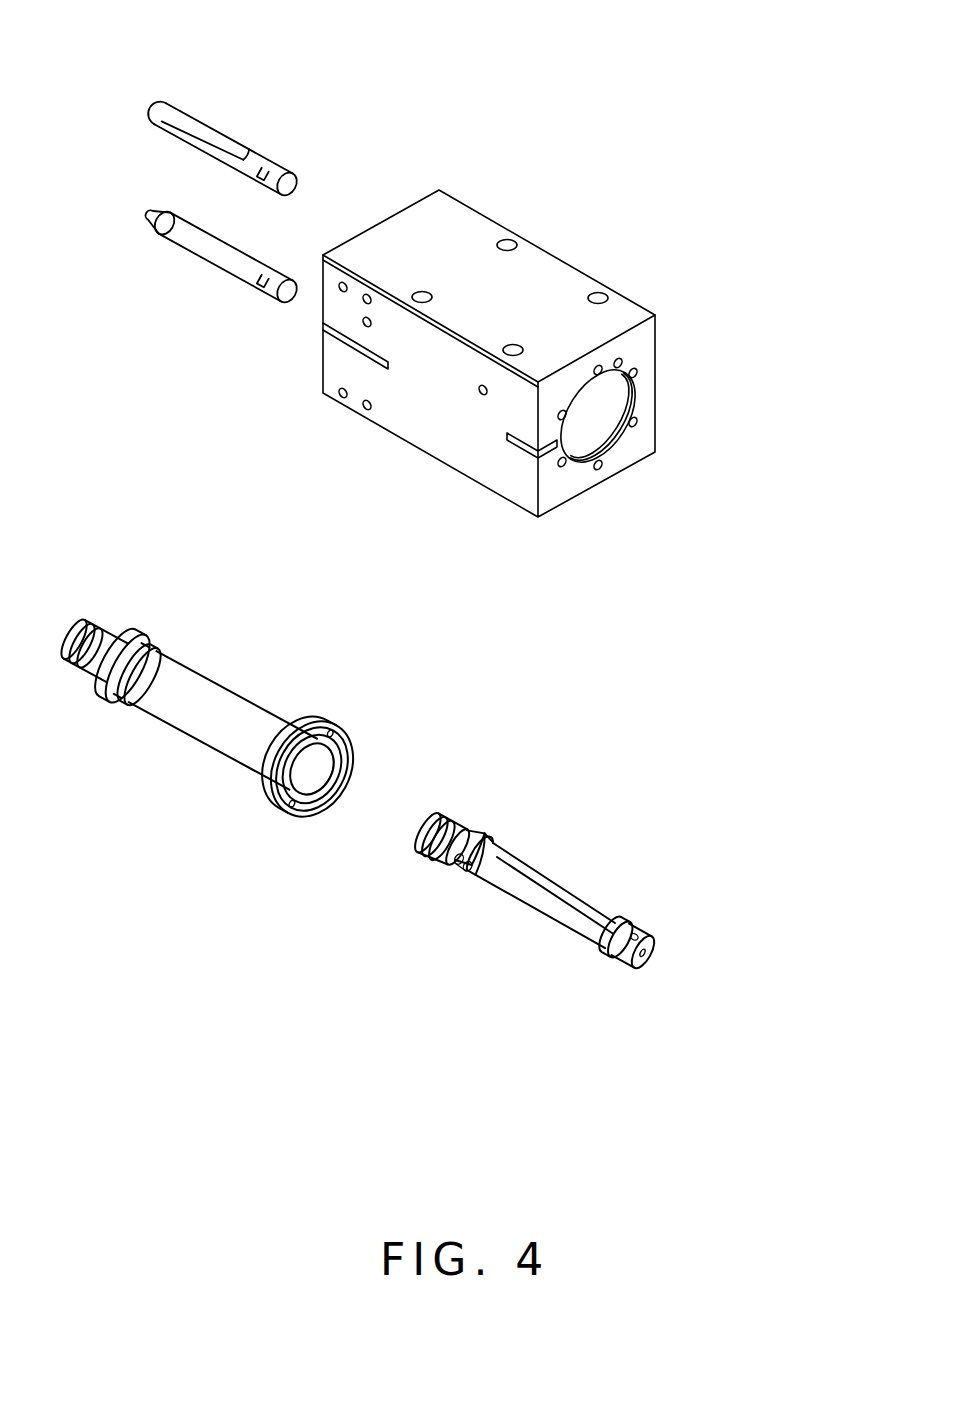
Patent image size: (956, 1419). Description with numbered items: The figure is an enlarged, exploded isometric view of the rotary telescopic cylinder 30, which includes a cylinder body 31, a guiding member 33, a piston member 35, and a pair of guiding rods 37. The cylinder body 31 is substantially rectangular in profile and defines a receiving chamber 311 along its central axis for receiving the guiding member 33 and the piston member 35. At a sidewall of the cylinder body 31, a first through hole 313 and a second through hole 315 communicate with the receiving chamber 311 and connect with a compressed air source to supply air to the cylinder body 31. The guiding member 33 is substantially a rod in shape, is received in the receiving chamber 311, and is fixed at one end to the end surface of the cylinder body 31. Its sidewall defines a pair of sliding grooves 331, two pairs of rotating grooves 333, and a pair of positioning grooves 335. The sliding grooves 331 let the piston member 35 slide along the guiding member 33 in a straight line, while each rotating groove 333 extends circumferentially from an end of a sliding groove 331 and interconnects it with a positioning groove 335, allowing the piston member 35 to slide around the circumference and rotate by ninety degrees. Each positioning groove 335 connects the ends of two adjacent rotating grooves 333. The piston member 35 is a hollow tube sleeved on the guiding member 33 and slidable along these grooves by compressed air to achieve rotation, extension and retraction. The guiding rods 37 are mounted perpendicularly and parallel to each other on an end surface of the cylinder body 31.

The rotary telescopic cylinder 30 is at (544, 77).
The cylinder body 31 is at (548, 273).
The receiving chamber 311 is at (583, 425).
The first through hole 313 is at (511, 352).
The second through hole 315 is at (412, 303).
The guiding member 33 is at (547, 908).
The sliding groove 331 is at (528, 878).
The rotating groove 333 is at (488, 843).
The positioning groove 335 is at (450, 860).
The piston member 35 is at (245, 737).
The guiding rod 37 is at (180, 122).